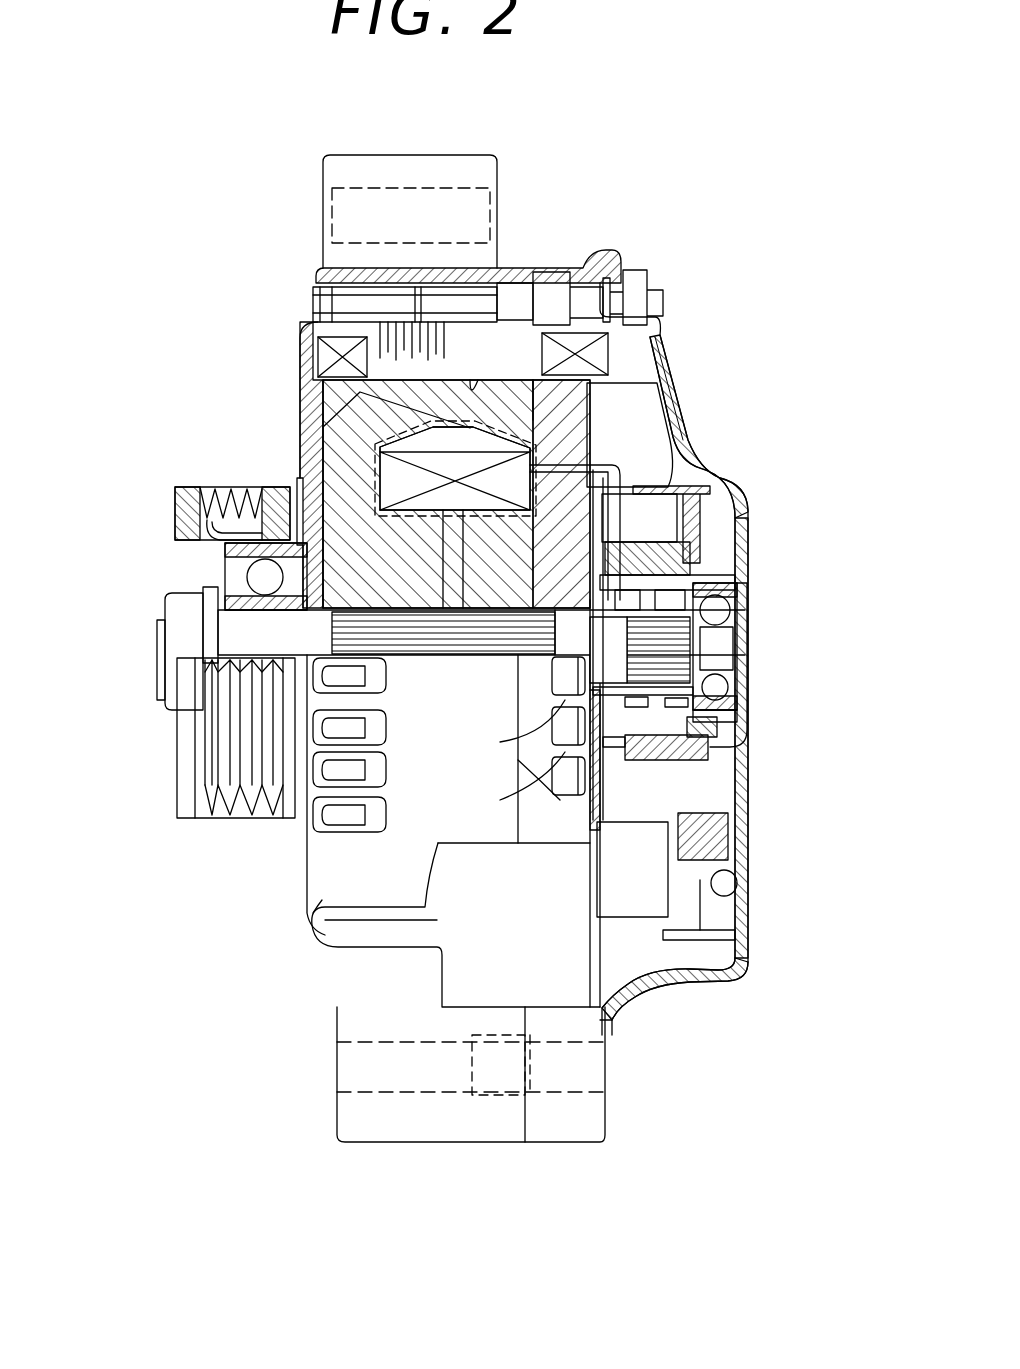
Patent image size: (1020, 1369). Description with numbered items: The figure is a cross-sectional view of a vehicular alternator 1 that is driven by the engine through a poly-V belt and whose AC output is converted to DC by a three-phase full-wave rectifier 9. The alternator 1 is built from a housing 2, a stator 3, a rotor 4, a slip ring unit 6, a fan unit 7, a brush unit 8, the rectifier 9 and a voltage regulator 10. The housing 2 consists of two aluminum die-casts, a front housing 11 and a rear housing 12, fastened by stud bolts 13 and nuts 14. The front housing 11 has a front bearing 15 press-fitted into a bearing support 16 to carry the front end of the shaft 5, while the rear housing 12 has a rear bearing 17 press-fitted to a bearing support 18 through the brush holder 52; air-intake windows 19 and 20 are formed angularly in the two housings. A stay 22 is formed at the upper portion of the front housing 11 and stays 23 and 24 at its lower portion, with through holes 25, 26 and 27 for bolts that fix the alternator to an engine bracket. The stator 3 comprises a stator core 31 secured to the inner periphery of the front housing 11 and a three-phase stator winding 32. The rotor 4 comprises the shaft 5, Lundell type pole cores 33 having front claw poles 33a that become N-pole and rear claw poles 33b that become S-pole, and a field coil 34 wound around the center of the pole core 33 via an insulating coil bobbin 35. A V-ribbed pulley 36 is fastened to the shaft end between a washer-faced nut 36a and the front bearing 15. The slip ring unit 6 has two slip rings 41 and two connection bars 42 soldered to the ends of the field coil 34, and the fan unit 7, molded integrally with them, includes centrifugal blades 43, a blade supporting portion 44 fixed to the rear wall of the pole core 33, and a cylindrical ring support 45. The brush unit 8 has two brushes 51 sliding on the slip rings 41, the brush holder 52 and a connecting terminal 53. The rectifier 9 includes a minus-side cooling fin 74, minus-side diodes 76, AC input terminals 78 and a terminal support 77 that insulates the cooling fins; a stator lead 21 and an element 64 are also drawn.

The alternator 1 is at (497, 658).
The housing 2 is at (312, 922).
The stator 3 is at (397, 352).
The rotor 4 is at (622, 362).
The shaft 5 is at (232, 628).
The slip ring unit 6 is at (716, 770).
The fan unit 7 is at (668, 398).
The brush unit 8 is at (712, 535).
The rectifier 9 is at (718, 940).
The voltage regulator 10 is at (707, 488).
The front housing 11 is at (312, 888).
The rear housing 12 is at (630, 984).
The stud bolts 13 is at (560, 275).
The nuts 14 is at (634, 272).
The front bearing 15 is at (262, 578).
The bearing support 16 is at (240, 540).
The rear bearing 17 is at (718, 688).
The bearing support 18 is at (726, 726).
The air-intake windows 19 is at (300, 432).
The air-intake windows 20 is at (745, 758).
The stator lead wire 21 is at (556, 792).
The stay 22 is at (400, 157).
The stay 23 is at (372, 1118).
The stay 24 is at (590, 1128).
The through hole 25 is at (358, 208).
The through hole 26 is at (432, 1066).
The through hole 27 is at (548, 1060).
The stator core 31 is at (430, 342).
The three-phase stator winding 32 is at (330, 356).
The pole cores 33 is at (456, 397).
The front claw poles 33a is at (478, 384).
The rear claw poles 33b is at (520, 384).
The field coil 34 is at (455, 500).
The coil bobbin 35 is at (503, 518).
The V-ribbed pulley 36 is at (190, 796).
The washer-faced nut 36a is at (168, 662).
The slip rings 41 is at (672, 755).
The connection bars 42 is at (616, 772).
The centrifugal blades 43 is at (645, 440).
The blade supporting portion 44 is at (592, 828).
The cylindrical ring support 45 is at (545, 737).
The brushes 51 is at (735, 628).
The brush holder 52 is at (732, 570).
The connecting terminal 53 is at (700, 525).
The voltage regulator 64 is at (620, 548).
The minus-side cooling fin 74 is at (752, 945).
The minus-side diodes 76 is at (748, 912).
The terminal support 77 is at (746, 820).
The AC input terminals 78 is at (748, 872).